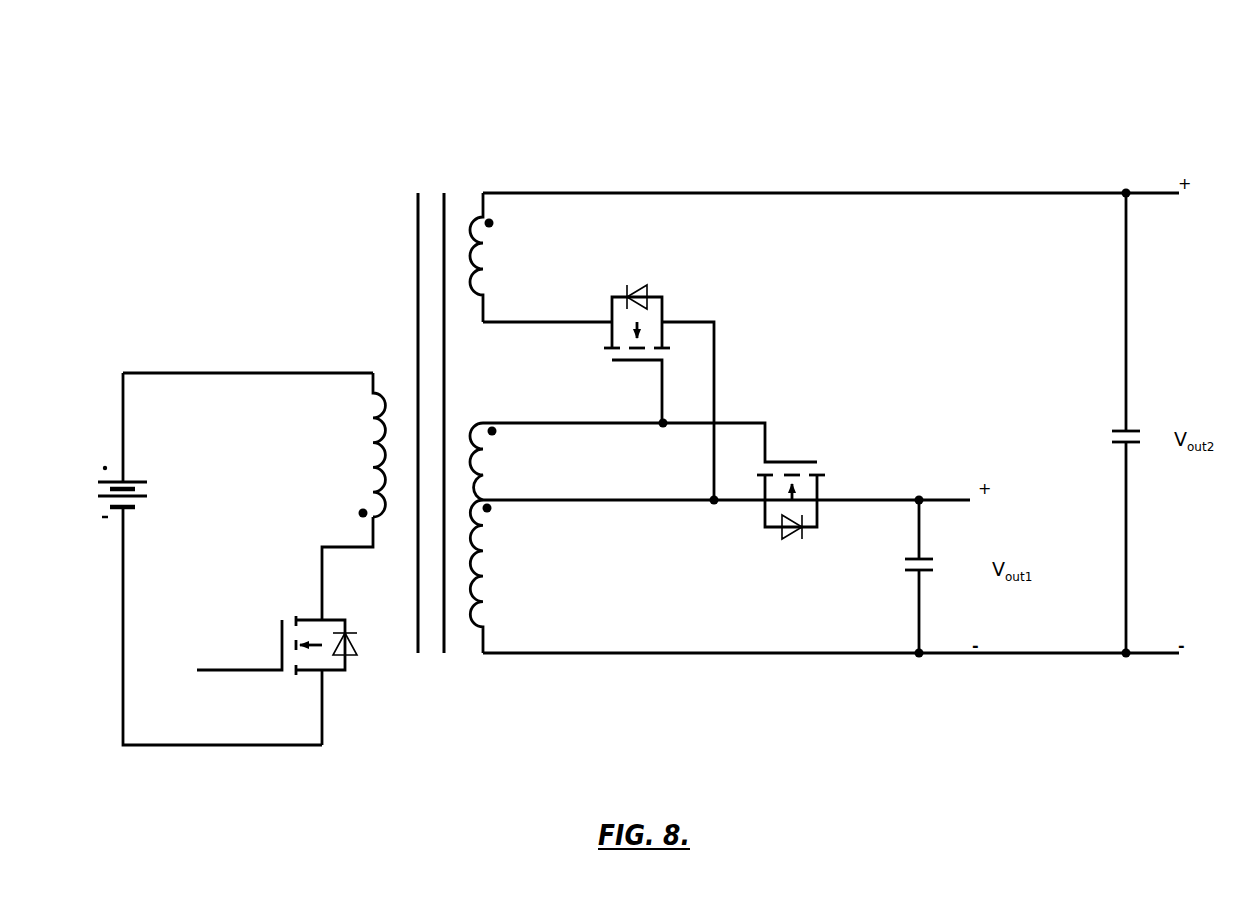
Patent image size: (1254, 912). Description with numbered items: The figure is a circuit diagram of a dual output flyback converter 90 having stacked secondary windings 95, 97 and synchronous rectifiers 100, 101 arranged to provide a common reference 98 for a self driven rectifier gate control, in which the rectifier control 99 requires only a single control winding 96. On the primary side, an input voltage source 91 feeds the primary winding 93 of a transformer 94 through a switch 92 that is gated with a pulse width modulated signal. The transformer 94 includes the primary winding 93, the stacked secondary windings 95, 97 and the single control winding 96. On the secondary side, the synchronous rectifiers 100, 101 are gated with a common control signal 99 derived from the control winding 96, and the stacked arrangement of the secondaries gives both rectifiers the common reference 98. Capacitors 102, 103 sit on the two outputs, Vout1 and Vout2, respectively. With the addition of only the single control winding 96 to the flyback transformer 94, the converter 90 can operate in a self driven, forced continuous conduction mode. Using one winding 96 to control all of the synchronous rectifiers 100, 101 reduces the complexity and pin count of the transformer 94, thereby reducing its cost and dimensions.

The dual output flyback converter 90 is at (811, 122).
The input voltage source 91 is at (92, 438).
The switch 92 is at (363, 680).
The primary winding 93 is at (350, 438).
The transformer 94 is at (374, 238).
The secondary winding 95 is at (512, 568).
The control winding 96 is at (512, 449).
The secondary winding 97 is at (494, 254).
The common reference 98 is at (712, 504).
The rectifier control 99 is at (743, 421).
The synchronous rectifier 100 is at (682, 301).
The synchronous rectifier 101 is at (839, 457).
The capacitor 102 is at (907, 568).
The capacitor 103 is at (1123, 444).